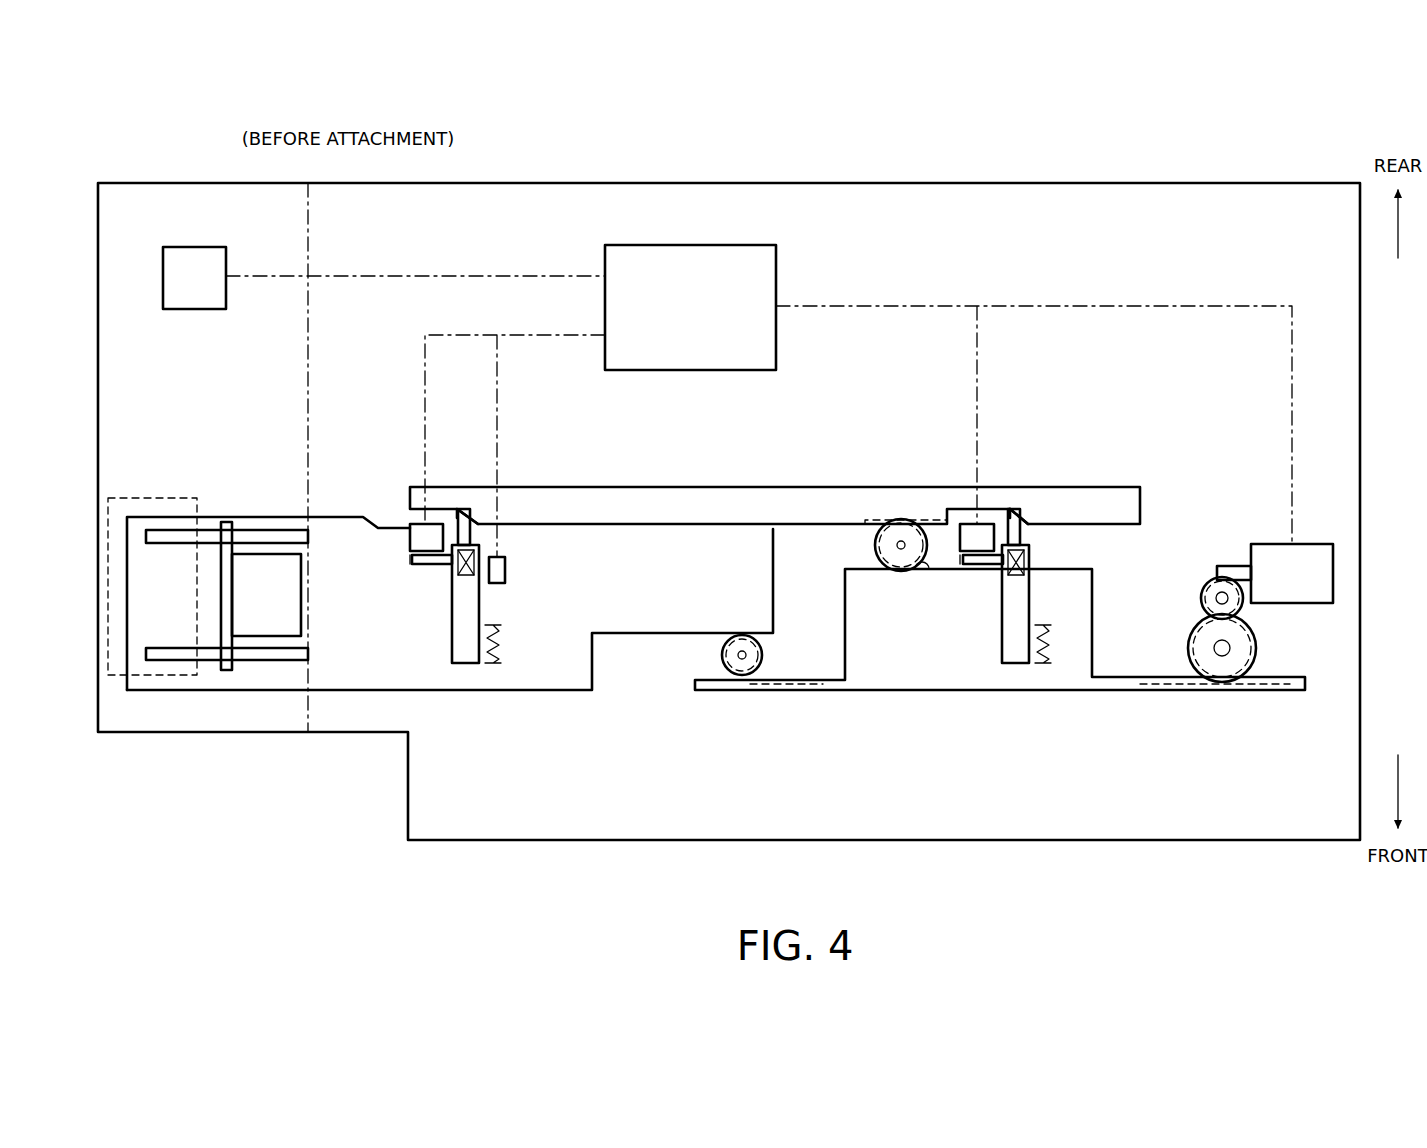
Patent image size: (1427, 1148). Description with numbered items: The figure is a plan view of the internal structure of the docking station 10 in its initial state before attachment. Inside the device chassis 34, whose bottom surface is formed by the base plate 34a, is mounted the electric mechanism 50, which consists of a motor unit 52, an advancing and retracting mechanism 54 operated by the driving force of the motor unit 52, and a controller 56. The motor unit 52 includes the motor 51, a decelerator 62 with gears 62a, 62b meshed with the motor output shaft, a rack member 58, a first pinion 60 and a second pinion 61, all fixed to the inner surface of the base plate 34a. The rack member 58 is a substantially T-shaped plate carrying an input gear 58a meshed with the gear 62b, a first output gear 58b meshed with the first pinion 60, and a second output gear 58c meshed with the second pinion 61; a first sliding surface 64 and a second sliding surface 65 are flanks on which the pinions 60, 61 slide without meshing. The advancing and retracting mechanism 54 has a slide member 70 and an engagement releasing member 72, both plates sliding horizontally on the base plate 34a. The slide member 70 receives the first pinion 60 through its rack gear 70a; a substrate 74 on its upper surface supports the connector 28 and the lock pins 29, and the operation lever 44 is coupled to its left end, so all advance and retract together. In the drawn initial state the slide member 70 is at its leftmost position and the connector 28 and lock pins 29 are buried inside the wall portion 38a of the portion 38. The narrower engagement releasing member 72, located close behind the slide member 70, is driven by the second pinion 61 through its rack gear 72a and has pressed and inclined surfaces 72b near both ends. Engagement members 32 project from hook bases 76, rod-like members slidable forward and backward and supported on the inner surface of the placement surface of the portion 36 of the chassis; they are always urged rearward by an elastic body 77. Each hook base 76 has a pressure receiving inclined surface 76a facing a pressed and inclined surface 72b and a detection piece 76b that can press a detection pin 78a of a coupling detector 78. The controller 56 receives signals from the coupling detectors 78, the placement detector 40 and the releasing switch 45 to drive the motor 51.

The docking station 10 is at (104, 97).
The connector 28 is at (250, 570).
The lock pins 29 is at (280, 530).
The engagement members 32 is at (462, 576).
The device chassis 34 is at (580, 181).
The base plate 34a is at (1006, 842).
The bottom surface 36 is at (906, 846).
The tray 38 is at (172, 736).
The wall portion 38a is at (308, 712).
The placement detector 40 is at (506, 570).
The operation lever 44 is at (112, 677).
The releasing switch 45 is at (197, 247).
The electric mechanism 50 is at (1008, 93).
The motor 51 is at (1312, 545).
The motor unit 52 is at (1251, 528).
The advancing and retracting mechanism 54 is at (793, 474).
The controller 56 is at (733, 249).
The rack member 58 is at (842, 692).
The input gear 58a is at (1160, 690).
The first output gear 58b is at (790, 690).
The second output gear 58c is at (883, 572).
The first pinion 60 is at (722, 652).
The second pinion 61 is at (900, 518).
The decelerator 62 is at (1320, 790).
The gear 62a is at (1241, 605).
The gear 62b is at (1222, 667).
The first sliding surface 64 is at (700, 688).
The second sliding surface 65 is at (922, 578).
The slide member 70 is at (538, 692).
The rack gear 70a is at (700, 632).
The engagement releasing member 72 is at (718, 485).
The rack gear 72a is at (877, 518).
The pressed and inclined surfaces 72b is at (455, 508).
The substrate 74 is at (226, 522).
The hook bases 76 is at (465, 663).
The pressure receiving inclined surface 76a is at (472, 513).
The detection piece 76b is at (410, 558).
The elastic body 77 is at (501, 640).
The coupling detectors 78 is at (415, 524).
The detection pins 78a is at (420, 564).